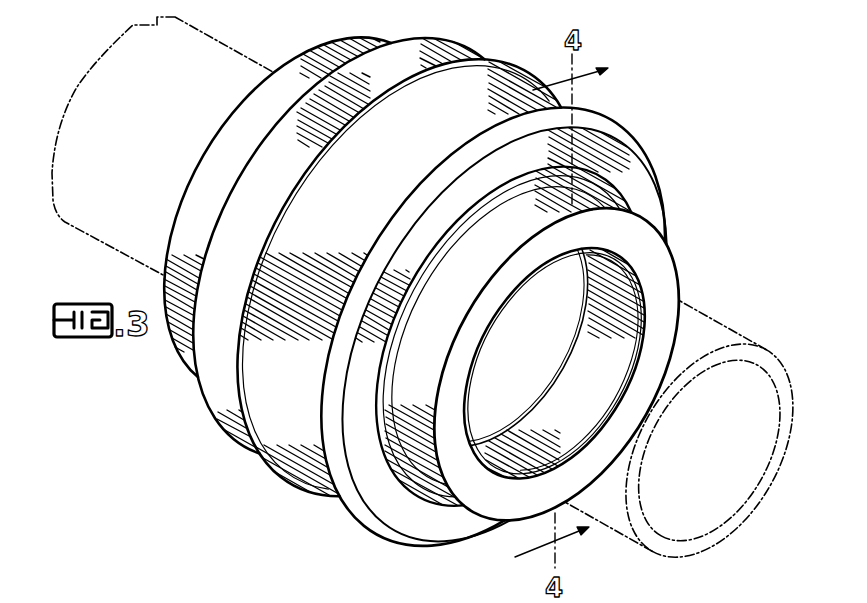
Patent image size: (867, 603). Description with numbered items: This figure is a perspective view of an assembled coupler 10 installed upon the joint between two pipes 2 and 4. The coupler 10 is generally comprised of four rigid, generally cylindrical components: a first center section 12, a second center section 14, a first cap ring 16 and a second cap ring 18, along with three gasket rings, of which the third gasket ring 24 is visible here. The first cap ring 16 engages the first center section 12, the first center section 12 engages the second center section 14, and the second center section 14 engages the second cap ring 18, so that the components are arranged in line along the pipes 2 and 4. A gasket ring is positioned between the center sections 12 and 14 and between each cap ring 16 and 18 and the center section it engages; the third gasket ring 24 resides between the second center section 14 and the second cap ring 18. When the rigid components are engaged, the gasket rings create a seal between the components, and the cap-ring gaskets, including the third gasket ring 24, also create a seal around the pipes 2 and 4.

The pipe 2 is at (236, 41).
The pipe 4 is at (724, 334).
The coupler 10 is at (408, 281).
The first center section 12 is at (422, 44).
The second center section 14 is at (646, 178).
The first cap ring 16 is at (327, 56).
The second cap ring 18 is at (661, 261).
The third gasket ring 24 is at (683, 286).